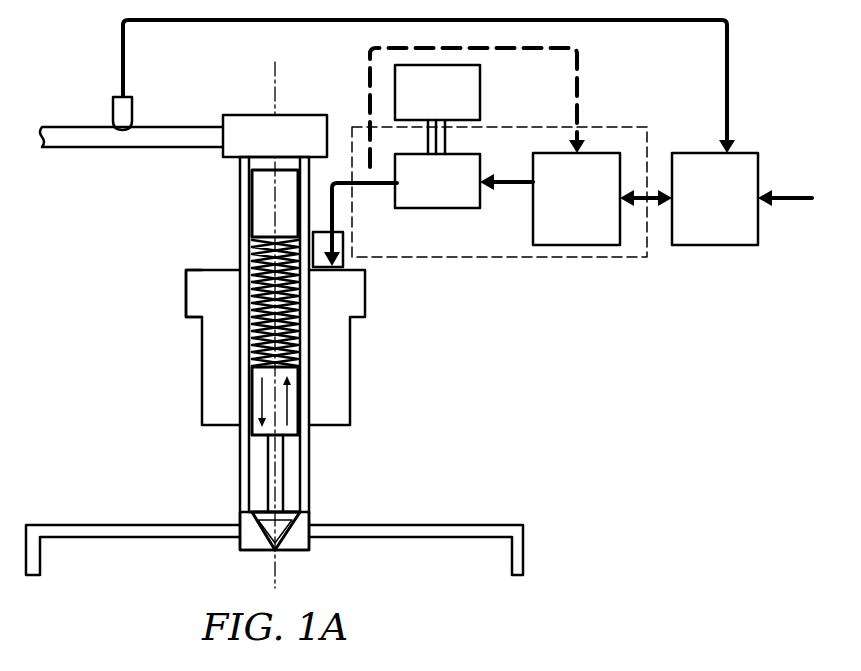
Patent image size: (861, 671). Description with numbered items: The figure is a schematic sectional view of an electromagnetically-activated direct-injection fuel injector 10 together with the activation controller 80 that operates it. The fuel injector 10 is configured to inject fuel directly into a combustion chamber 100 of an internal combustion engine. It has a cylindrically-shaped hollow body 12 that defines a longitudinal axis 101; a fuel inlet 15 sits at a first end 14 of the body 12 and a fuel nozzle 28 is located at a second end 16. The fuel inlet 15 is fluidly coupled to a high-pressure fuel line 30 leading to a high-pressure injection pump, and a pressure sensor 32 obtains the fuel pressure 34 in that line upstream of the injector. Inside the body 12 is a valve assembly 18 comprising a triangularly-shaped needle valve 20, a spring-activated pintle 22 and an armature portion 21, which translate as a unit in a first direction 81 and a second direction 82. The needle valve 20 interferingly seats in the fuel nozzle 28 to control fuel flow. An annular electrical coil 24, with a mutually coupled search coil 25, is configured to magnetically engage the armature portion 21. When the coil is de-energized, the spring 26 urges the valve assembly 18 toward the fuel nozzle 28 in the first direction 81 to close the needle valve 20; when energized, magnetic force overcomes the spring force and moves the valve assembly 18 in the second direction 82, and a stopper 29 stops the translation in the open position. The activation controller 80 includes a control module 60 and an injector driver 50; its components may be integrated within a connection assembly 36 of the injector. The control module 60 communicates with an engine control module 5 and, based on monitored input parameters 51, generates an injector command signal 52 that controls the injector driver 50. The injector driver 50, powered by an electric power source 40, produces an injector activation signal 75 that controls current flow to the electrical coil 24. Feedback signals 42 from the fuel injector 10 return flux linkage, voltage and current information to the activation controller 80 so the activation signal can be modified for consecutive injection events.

The engine control module 5 is at (706, 211).
The fuel injector 10 is at (194, 344).
The body 12 is at (240, 207).
The first end 14 is at (216, 164).
The fuel inlet 15 is at (223, 152).
The second end 16 is at (318, 516).
The valve assembly 18 is at (258, 459).
The needle valve 20 is at (256, 518).
The armature portion 21 is at (252, 407).
The pintle 22 is at (268, 492).
The electrical coil 24 is at (330, 363).
The search coil 25 is at (186, 296).
The spring 26 is at (300, 333).
The fuel nozzle 28 is at (272, 553).
The stopper 29 is at (252, 232).
The high-pressure fuel line 30 is at (75, 127).
The pressure sensor 32 is at (134, 108).
The fuel pressure 34 is at (93, 63).
The connection assembly 36 is at (340, 243).
The electric power source 40 is at (425, 103).
The feedback signal 42 is at (338, 93).
The injector driver 50 is at (425, 193).
The monitored input parameters 51 is at (778, 194).
The injector command signal 52 is at (503, 178).
The control module 60 is at (564, 211).
The injector activation signal 75 is at (356, 206).
The activation controller 80 is at (490, 258).
The first direction 81 is at (299, 438).
The second direction 82 is at (298, 405).
The combustion chamber 100 is at (52, 567).
The longitudinal axis 101 is at (275, 82).